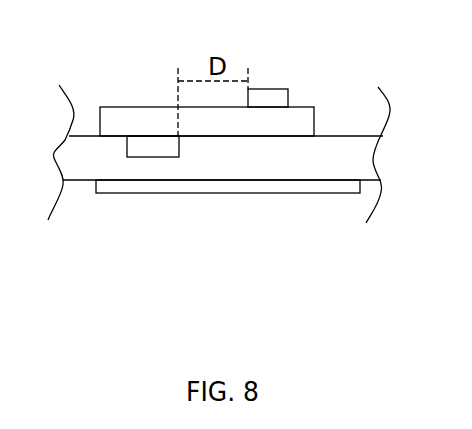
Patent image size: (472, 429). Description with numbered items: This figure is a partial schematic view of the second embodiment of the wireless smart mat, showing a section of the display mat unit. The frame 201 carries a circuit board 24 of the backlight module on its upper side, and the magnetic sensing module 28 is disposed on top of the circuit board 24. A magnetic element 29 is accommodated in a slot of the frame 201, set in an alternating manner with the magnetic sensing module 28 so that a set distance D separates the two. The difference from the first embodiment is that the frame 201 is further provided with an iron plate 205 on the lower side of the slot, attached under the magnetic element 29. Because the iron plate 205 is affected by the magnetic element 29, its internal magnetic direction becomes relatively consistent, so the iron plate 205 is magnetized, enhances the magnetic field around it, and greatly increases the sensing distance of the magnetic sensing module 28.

The frame 201 is at (330, 150).
The circuit board 24 is at (147, 113).
The magnetic sensing module 28 is at (267, 98).
The magnetic element 29 is at (158, 149).
The iron plate 205 is at (283, 183).